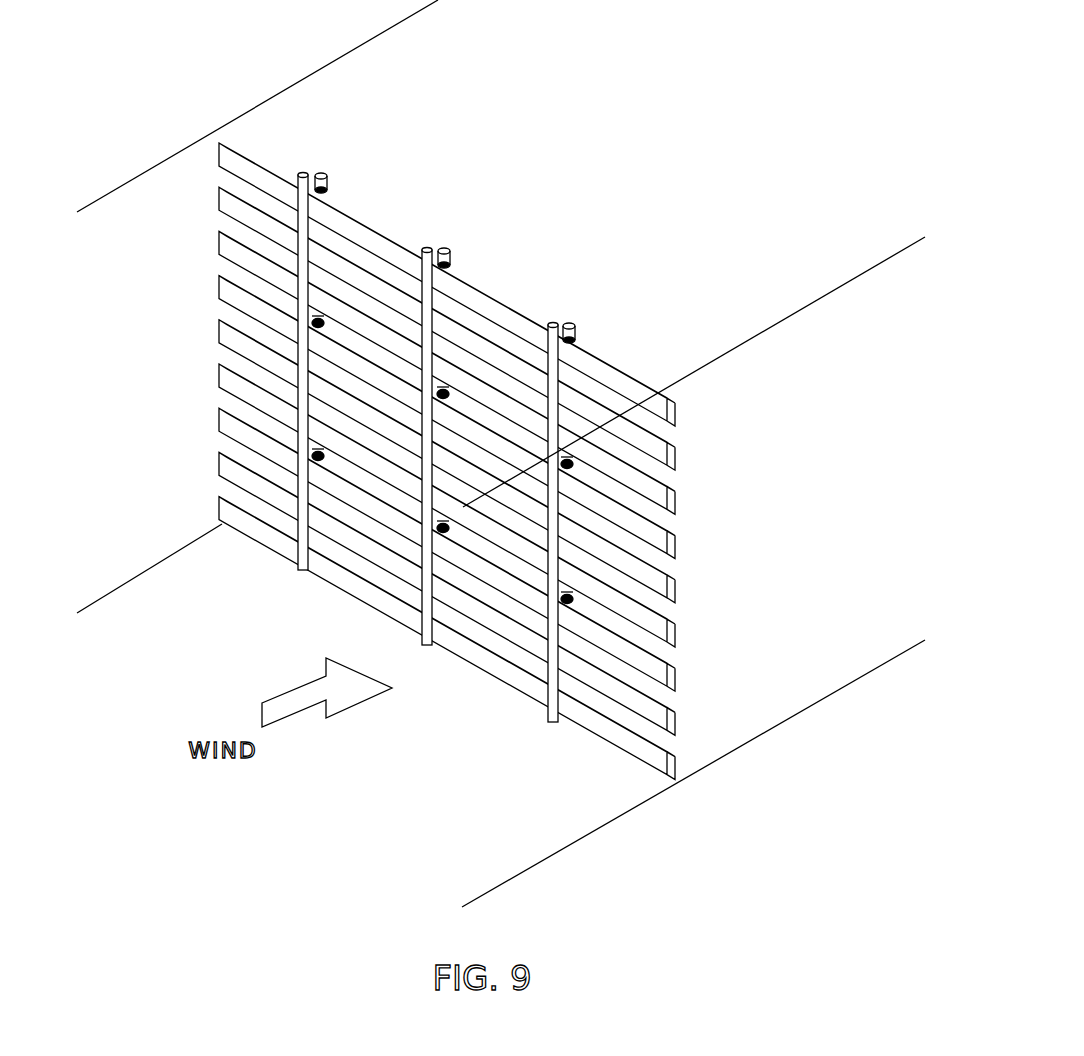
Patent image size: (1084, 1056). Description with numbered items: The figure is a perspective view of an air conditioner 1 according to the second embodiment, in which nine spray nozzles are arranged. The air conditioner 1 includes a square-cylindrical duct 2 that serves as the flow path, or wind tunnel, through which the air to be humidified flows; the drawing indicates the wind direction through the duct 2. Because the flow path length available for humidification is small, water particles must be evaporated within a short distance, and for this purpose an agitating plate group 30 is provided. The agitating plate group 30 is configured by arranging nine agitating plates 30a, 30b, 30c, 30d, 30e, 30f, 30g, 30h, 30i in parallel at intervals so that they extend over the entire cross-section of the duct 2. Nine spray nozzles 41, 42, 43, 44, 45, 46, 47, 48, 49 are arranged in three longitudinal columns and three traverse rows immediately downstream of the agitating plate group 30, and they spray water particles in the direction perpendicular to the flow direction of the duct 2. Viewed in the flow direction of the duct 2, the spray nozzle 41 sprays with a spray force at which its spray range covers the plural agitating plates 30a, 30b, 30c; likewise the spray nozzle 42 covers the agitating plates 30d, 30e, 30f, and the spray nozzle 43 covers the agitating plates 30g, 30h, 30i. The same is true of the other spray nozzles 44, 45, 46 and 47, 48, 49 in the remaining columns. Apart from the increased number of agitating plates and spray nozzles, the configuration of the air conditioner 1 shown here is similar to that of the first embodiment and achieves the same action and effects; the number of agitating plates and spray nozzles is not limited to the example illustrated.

The air conditioner 1 is at (137, 106).
The duct 2 is at (118, 190).
The agitating plate group 30 is at (808, 555).
The agitating plate 30a is at (678, 412).
The agitating plate 30b is at (678, 456).
The agitating plate 30c is at (678, 500).
The agitating plate 30d is at (678, 544).
The agitating plate 30e is at (678, 589).
The agitating plate 30f is at (678, 633).
The agitating plate 30g is at (678, 677).
The agitating plate 30h is at (678, 721).
The agitating plate 30i is at (678, 766).
The spray nozzle 41 is at (325, 170).
The spray nozzle 42 is at (313, 321).
The spray nozzle 43 is at (313, 455).
The spray nozzle 44 is at (447, 245).
The spray nozzle 45 is at (446, 385).
The spray nozzle 46 is at (445, 535).
The spray nozzle 47 is at (572, 318).
The spray nozzle 48 is at (572, 462).
The spray nozzle 49 is at (568, 602).